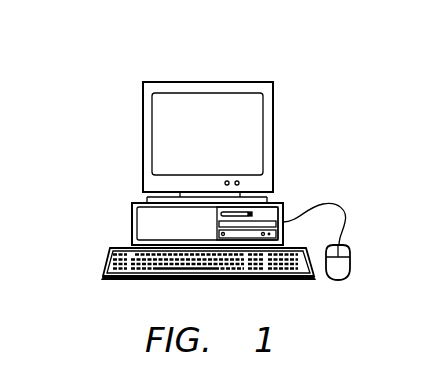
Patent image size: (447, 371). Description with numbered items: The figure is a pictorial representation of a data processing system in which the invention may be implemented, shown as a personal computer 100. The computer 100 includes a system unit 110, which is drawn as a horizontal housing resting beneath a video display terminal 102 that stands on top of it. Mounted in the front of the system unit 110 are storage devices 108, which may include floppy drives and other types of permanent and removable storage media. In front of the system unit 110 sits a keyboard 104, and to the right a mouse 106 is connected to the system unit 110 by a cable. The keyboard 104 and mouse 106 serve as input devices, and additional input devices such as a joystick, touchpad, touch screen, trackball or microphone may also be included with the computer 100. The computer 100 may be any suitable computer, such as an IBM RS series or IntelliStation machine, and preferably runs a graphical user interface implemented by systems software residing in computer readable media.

The computer 100 is at (130, 46).
The video display terminal 102 is at (158, 135).
The keyboard 104 is at (127, 262).
The mouse 106 is at (338, 283).
The storage devices 108 is at (252, 214).
The system unit 110 is at (132, 222).